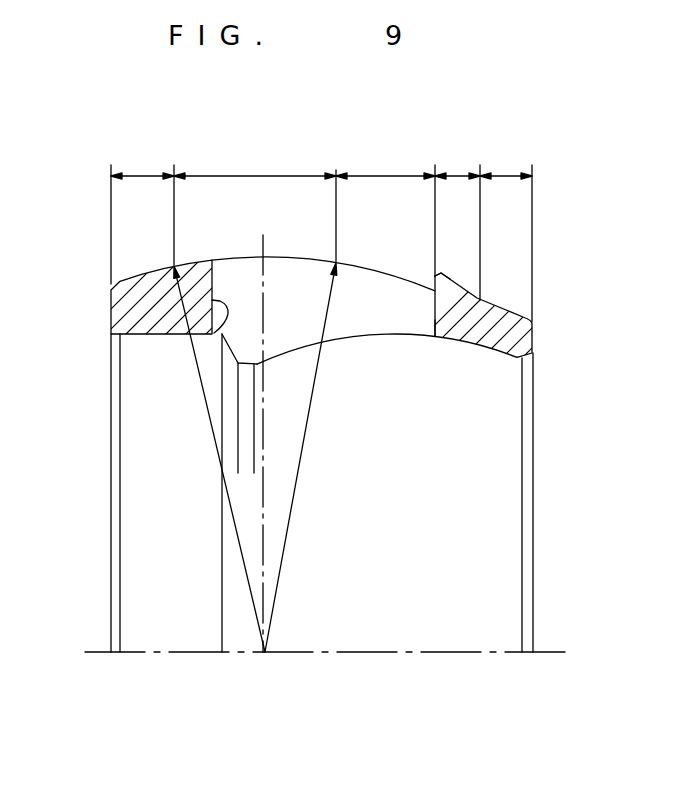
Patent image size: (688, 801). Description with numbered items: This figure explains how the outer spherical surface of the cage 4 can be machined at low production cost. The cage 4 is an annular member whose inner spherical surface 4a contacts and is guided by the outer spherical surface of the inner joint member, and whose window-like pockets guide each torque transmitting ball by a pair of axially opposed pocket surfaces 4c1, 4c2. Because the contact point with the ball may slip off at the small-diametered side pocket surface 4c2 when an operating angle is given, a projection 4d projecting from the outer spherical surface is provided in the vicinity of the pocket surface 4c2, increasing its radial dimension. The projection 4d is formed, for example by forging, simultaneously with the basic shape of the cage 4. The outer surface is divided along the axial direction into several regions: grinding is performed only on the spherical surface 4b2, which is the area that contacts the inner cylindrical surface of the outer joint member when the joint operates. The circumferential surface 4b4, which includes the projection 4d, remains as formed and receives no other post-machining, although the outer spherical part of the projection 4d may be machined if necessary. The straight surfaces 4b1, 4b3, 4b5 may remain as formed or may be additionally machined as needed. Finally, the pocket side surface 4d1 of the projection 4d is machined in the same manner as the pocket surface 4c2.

The cage 4 is at (96, 278).
The inner spherical surface 4a is at (378, 337).
The straight surface 4b1 is at (188, 392).
The spherical surface 4b2 is at (255, 392).
The straight surface 4b3 is at (385, 204).
The circumferential surface 4b4 is at (460, 218).
The straight surface 4b5 is at (513, 227).
The pocket surface 4c1 is at (201, 355).
The small-diametered side pocket surface 4c2 is at (433, 336).
The projection 4d is at (453, 280).
The pocket side surface 4d1 is at (435, 278).